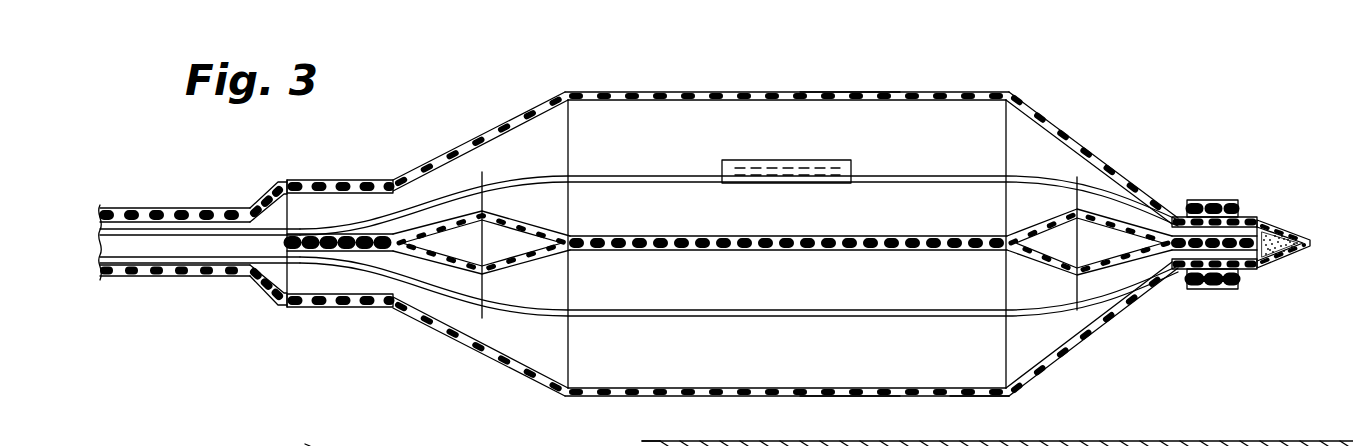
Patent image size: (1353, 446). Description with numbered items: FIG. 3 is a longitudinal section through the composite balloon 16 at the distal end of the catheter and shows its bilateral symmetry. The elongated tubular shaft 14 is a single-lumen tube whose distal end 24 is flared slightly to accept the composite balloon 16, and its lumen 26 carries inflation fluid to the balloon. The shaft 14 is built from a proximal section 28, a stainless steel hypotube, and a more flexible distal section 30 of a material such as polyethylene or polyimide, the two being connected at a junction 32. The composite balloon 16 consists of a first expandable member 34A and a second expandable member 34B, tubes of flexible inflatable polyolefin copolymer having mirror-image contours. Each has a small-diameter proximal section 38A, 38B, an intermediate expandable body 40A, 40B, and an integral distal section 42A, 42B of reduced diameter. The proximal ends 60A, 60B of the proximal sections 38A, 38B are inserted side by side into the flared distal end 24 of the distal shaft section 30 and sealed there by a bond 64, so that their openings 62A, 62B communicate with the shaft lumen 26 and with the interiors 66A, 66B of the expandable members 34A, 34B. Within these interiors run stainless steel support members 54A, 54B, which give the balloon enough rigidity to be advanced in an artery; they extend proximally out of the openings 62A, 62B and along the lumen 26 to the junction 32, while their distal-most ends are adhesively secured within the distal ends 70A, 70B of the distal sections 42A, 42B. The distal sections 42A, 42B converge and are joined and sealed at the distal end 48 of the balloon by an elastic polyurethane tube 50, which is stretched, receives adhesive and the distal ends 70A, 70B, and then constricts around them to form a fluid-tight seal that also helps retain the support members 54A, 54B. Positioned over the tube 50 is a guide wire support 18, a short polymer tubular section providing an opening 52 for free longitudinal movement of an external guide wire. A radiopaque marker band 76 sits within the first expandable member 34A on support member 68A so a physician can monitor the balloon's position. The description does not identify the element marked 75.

The elongated tubular shaft 14 is at (159, 184).
The composite balloon 16 is at (627, 81).
The guide wire support 18 is at (1205, 200).
The distal end 24 is at (346, 184).
The lumen 26 is at (110, 246).
The proximal section 28 is at (316, 425).
The distal section 30 is at (156, 278).
The junction 32 is at (642, 440).
The first expandable member 34A is at (838, 92).
The second expandable member 34B is at (820, 394).
The proximal section 38A is at (472, 141).
The proximal section 38B is at (460, 337).
The intermediate expandable body 40A is at (733, 92).
The intermediate expandable body 40B is at (670, 395).
The distal section 42A is at (1117, 175).
The distal section 42B is at (1114, 306).
The distal end 48 is at (1298, 260).
The tube 50 is at (1298, 228).
The opening 52 is at (1204, 284).
The support member 54A is at (534, 174).
The support member 54B is at (495, 305).
The proximal end 60A is at (303, 188).
The proximal end 60B is at (313, 292).
The opening 62A is at (274, 196).
The opening 62B is at (280, 283).
The bond 64 is at (390, 182).
The interior 66A is at (944, 112).
The interior 66B is at (968, 362).
The support member 68A is at (778, 425).
The distal end 70A is at (1253, 217).
The distal end 70B is at (1248, 272).
The rod end 75 is at (688, 440).
The marker band 76 is at (797, 160).